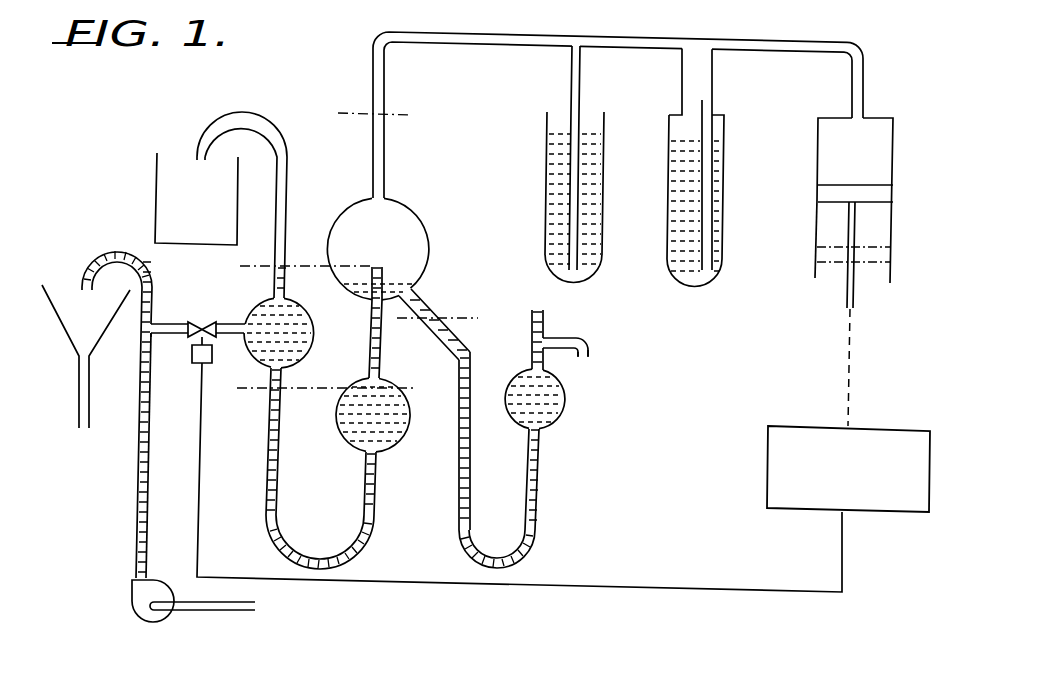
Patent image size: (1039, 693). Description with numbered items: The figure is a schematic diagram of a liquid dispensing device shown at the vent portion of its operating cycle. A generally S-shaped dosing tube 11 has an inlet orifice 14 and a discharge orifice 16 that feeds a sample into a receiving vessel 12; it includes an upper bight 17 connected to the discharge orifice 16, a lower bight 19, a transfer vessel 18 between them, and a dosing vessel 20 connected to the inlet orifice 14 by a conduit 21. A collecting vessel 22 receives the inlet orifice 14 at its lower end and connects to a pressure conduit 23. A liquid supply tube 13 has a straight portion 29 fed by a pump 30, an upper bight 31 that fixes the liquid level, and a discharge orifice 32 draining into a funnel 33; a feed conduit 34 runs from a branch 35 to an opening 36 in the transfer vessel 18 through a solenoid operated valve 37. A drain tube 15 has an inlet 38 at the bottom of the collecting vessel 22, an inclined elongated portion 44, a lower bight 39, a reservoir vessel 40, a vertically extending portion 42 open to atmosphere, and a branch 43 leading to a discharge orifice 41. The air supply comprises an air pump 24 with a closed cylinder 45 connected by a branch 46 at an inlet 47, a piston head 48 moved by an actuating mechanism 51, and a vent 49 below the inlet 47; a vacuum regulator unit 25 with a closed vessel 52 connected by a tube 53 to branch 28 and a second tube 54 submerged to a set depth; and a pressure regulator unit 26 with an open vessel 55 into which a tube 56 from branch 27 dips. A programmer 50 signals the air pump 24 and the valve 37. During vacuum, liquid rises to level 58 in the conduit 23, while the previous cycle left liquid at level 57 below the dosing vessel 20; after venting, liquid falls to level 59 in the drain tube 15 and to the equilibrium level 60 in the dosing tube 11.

The dosing tube 11 is at (331, 491).
The receiving vessel 12 is at (157, 183).
The liquid supply tube 13 is at (122, 517).
The inlet orifice 14 is at (384, 268).
The drain tube 15 is at (503, 481).
The discharge orifice 16 is at (197, 155).
The upper bight 17 is at (252, 110).
The transfer vessel 18 is at (313, 325).
The lower bight 19 is at (355, 564).
The dosing vessel 20 is at (399, 441).
The conduit 21 is at (383, 357).
The collecting vessel 22 is at (416, 205).
The pressure conduit 23 is at (485, 32).
The air pump 24 is at (900, 183).
The vacuum regulator unit 25 is at (729, 176).
The pressure regulator unit 26 is at (609, 174).
The branch 27 is at (585, 50).
The branch 28 is at (697, 50).
The straight portion 29 is at (138, 472).
The pump 30 is at (150, 628).
The upper bight 31 is at (128, 250).
The discharge orifice 32 is at (84, 286).
The funnel 33 is at (63, 334).
The feed conduit 34 is at (167, 323).
The branch 35 is at (158, 337).
The opening 36 is at (243, 338).
The solenoid operated valve 37 is at (204, 326).
The inlet 38 is at (418, 300).
The lower bight 39 is at (523, 563).
The reservoir vessel 40 is at (560, 418).
The discharge orifice 41 is at (589, 355).
The vertically extending portion 42 is at (532, 322).
The branch 43 is at (548, 336).
The elongated portion 44 is at (455, 345).
The closed cylinder 45 is at (818, 226).
The branch 46 is at (868, 50).
The inlet 47 is at (864, 118).
The piston head 48 is at (848, 185).
The vent 49 is at (893, 240).
The programmer 50 is at (792, 426).
The actuating mechanism 51 is at (847, 300).
The closed vessel 52 is at (724, 139).
The tube 53 is at (682, 95).
The second tube 54 is at (712, 104).
The vessel 55 is at (547, 154).
The tube 56 is at (572, 97).
The level 57 is at (305, 388).
The level 58 is at (412, 113).
The level 59 is at (462, 318).
The level 60 is at (316, 266).